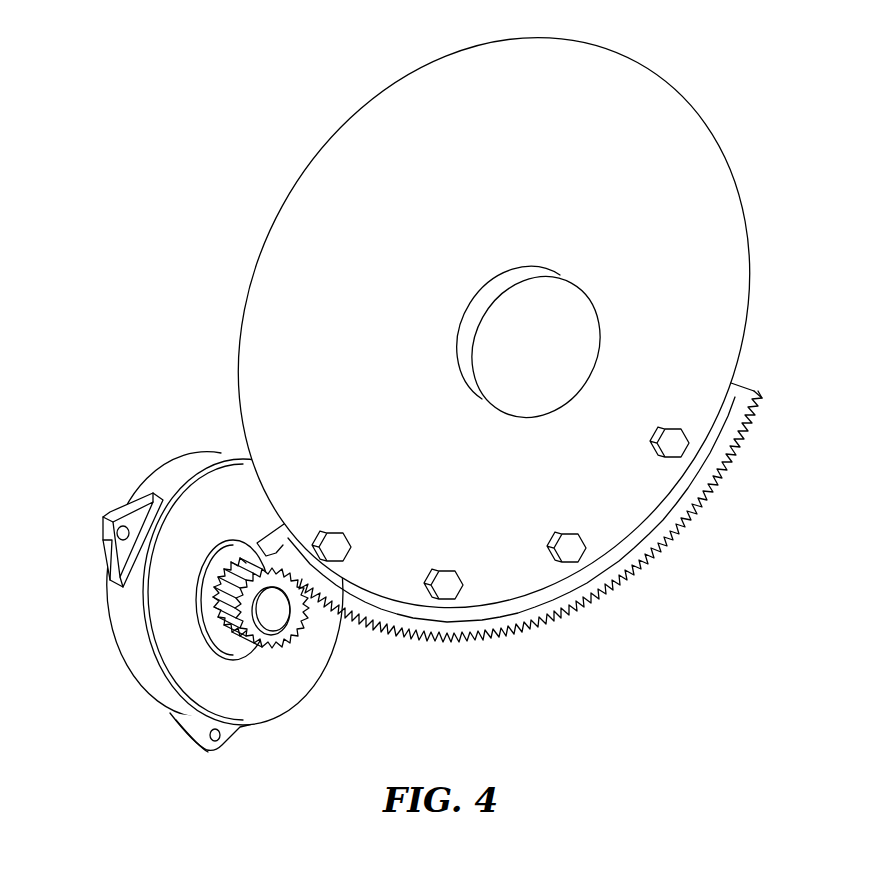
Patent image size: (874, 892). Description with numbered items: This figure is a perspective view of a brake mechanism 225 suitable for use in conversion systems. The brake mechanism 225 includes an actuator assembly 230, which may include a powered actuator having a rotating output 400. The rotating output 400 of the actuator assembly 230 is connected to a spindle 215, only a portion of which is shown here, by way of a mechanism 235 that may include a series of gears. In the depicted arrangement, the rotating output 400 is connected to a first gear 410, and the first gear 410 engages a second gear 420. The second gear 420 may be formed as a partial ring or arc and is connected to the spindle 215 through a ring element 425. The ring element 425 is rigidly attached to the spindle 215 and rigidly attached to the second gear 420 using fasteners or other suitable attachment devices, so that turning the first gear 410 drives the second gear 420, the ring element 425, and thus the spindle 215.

The spindle 215 is at (578, 327).
The brake mechanism 225 is at (196, 426).
The actuator assembly 230 is at (163, 630).
The mechanism 235 is at (362, 662).
The rotating output 400 is at (221, 670).
The first gear 410 is at (277, 652).
The second gear 420 is at (618, 553).
The ring element 425 is at (730, 242).